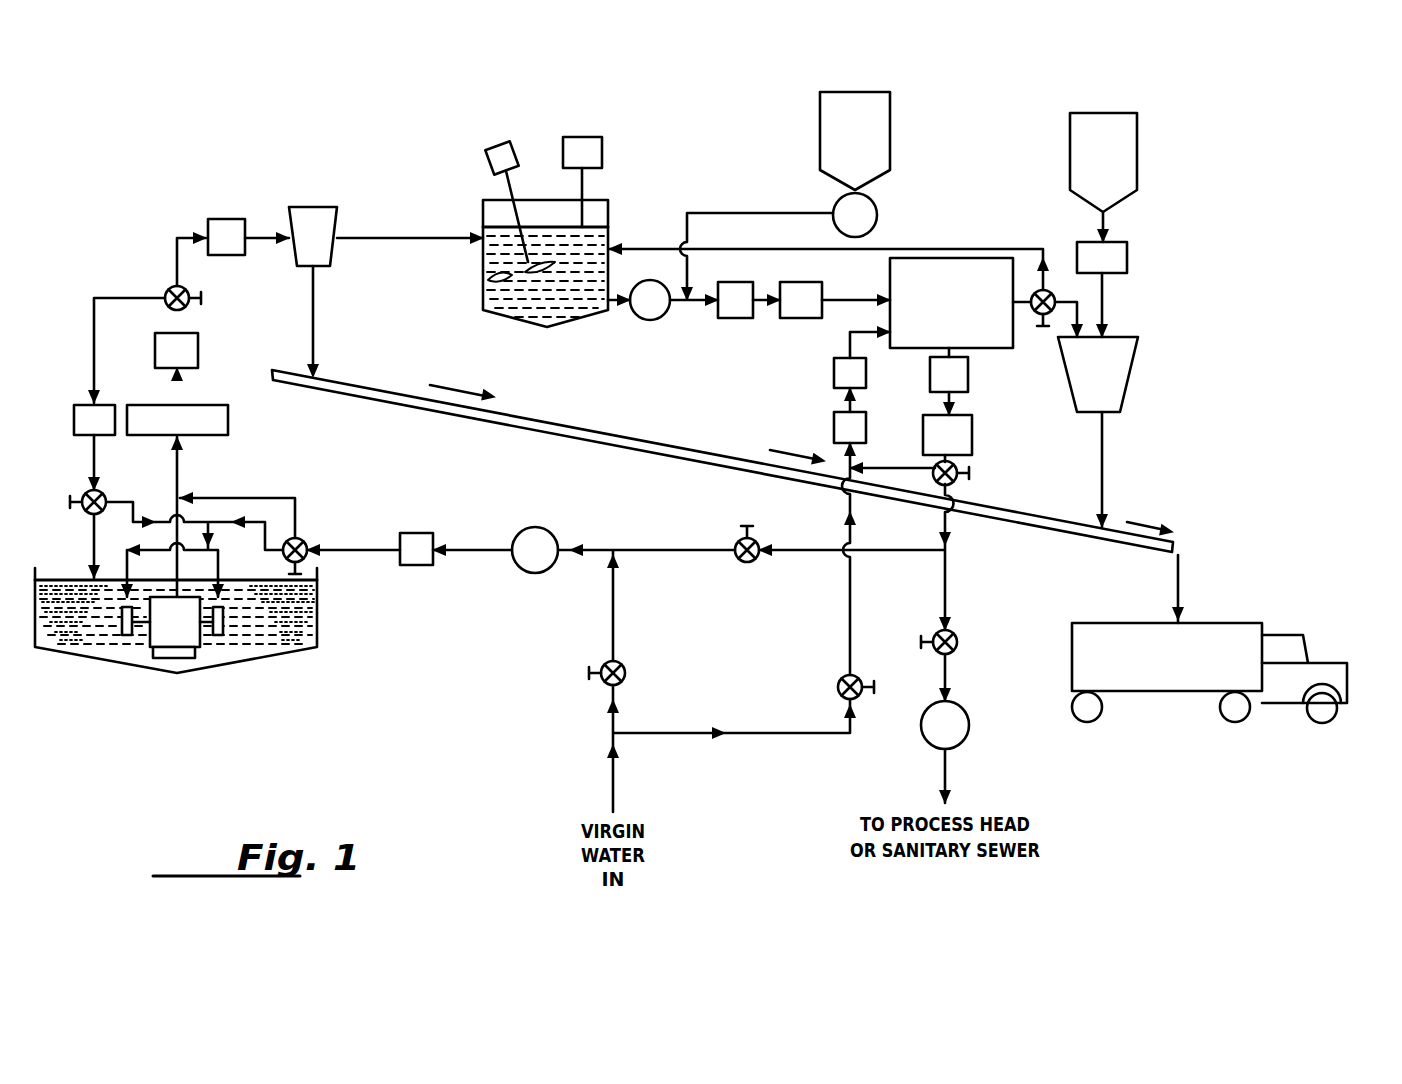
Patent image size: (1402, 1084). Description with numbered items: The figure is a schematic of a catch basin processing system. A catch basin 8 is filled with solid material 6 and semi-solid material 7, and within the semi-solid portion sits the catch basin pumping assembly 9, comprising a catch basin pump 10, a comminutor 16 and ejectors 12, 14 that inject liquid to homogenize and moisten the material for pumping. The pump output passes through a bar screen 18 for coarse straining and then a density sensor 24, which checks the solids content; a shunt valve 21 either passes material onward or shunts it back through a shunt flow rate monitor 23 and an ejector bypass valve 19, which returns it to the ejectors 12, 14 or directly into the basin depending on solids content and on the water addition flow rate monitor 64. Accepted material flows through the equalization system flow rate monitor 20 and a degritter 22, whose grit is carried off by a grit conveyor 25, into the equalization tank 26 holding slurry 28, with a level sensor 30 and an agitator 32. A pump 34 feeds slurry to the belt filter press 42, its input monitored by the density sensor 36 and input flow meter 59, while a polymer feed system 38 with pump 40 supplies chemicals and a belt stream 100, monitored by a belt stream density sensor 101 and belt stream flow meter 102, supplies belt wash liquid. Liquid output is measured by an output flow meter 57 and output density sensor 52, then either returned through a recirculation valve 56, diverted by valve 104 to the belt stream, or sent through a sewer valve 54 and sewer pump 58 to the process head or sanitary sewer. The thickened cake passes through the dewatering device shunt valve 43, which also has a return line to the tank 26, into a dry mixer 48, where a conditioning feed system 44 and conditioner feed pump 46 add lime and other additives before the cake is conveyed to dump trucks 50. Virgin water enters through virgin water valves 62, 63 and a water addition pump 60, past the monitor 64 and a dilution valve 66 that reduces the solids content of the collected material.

The solid material 6 is at (300, 603).
The semi-solid material 7 is at (258, 612).
The catch basin 8 is at (322, 652).
The catch basin pumping assembly 9 is at (210, 658).
The catch basin pump 10 is at (165, 645).
The ejector 12 is at (226, 626).
The ejector 14 is at (124, 632).
The comminutor 16 is at (185, 658).
The bar screen 18 is at (215, 425).
The ejector bypass valve 19 is at (105, 492).
The equalization system flow rate monitor 20 is at (234, 219).
The shunt valve 21 is at (166, 291).
The degritter 22 is at (313, 212).
The shunt flow rate monitor 23 is at (74, 418).
The density sensor 24 is at (195, 345).
The grit conveyor 25 is at (580, 432).
The equalization tank 26 is at (483, 278).
The slurry 28 is at (590, 240).
The level sensor 30 is at (601, 140).
The agitator 32 is at (503, 146).
The pump 34 is at (649, 320).
The dewatering device density sensor 36 is at (733, 318).
The polymer feed system 38 is at (880, 138).
The pump 40 is at (878, 218).
The belt filter press 42 is at (892, 348).
The dewatering device shunt valve 43 is at (1040, 316).
The conditioning feed system 44 is at (1130, 155).
The conditioner feed pump 46 is at (1125, 256).
The dry mixer 48 is at (1117, 385).
The dump truck 50 is at (1172, 677).
The output density sensor 52 is at (972, 440).
The sewer valve 54 is at (956, 634).
The recirculation valve 56 is at (758, 540).
The output flow meter 57 is at (968, 375).
The sewer pump 58 is at (962, 722).
The input flow meter 59 is at (806, 318).
The water addition pump 60 is at (549, 534).
The virgin water valve 62 is at (626, 665).
The virgin water valve 63 is at (838, 680).
The water addition flow rate monitor 64 is at (433, 535).
The dilution valve 66 is at (306, 543).
The belt stream 100 is at (845, 340).
The belt stream density sensor 101 is at (834, 387).
The belt stream flow meter 102 is at (834, 425).
The valve 104 is at (958, 479).